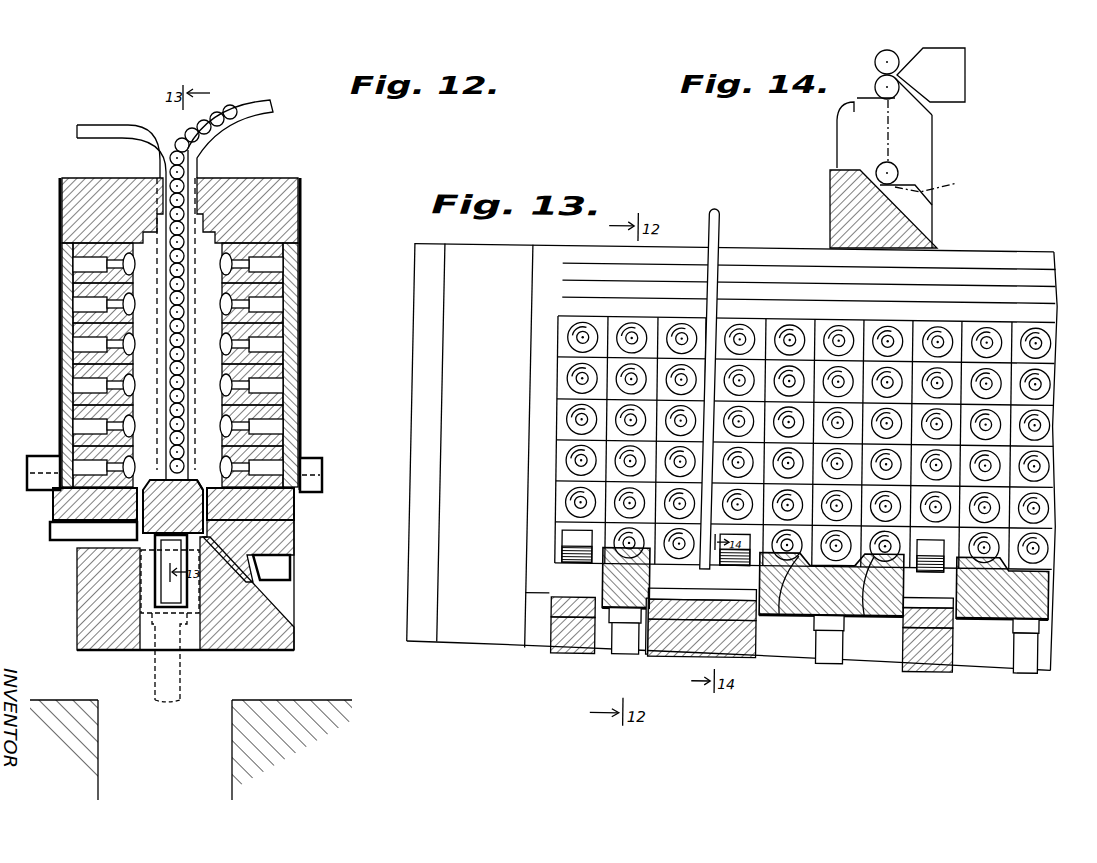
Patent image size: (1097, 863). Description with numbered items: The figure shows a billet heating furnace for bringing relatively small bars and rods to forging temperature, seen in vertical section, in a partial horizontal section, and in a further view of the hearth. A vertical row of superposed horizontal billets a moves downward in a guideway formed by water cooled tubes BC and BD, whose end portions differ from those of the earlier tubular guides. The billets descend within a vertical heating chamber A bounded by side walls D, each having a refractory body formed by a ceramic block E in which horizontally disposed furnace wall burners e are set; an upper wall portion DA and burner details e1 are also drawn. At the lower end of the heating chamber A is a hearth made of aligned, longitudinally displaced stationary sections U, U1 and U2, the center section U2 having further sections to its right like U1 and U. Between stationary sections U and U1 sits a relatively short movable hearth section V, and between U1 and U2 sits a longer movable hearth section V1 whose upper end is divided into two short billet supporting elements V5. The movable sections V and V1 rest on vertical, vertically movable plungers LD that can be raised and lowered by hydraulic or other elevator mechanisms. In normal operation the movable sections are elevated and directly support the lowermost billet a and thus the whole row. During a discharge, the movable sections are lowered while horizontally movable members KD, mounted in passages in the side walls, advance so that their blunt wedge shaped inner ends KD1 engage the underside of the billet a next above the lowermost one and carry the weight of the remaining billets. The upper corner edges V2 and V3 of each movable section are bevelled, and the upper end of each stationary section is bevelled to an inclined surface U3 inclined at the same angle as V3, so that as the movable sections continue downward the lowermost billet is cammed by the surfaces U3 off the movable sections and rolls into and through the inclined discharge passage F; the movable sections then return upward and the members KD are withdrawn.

In FIG. 12, the water cooled tube BC is at (150, 140).
In FIG. 13, the water cooled tube BC is at (720, 236).
In FIG. 12, the water cooled tube BD is at (220, 134).
In FIG. 12, the upper block DA is at (300, 199).
In FIG. 12, the side wall D is at (75, 212).
In FIG. 13, the side wall D is at (478, 632).
In FIG. 12, the heating chamber A is at (208, 258).
In FIG. 12, the ceramic block E is at (268, 334).
In FIG. 13, the ceramic block E is at (566, 343).
In FIG. 12, the furnace wall burner e is at (265, 307).
In FIG. 13, the furnace wall burner e is at (567, 458).
In FIG. 12, the cell bulb e1 is at (138, 300).
In FIG. 13, the cell bulb e1 is at (572, 412).
In FIG. 12, the billet a is at (182, 343).
In FIG. 14, the billet a is at (887, 142).
In FIG. 12, the horizontally movable member (plunger) KD is at (42, 462).
In FIG. 13, the horizontally movable member (plunger) KD is at (573, 540).
In FIG. 14, the horizontally movable member (plunger) KD is at (952, 87).
In FIG. 14, the inner end of plunger KD1 is at (861, 102).
In FIG. 12, the movable hearth section V is at (294, 508).
In FIG. 13, the movable hearth section V is at (640, 573).
In FIG. 12, the left hand upper corner edge V2 is at (156, 480).
In FIG. 14, the left hand upper corner edge V2 is at (837, 128).
In FIG. 12, the right hand upper corner edge V3 is at (195, 480).
In FIG. 14, the right hand upper corner edge V3 is at (932, 115).
In FIG. 13, the movable hearth section V1 is at (887, 578).
In FIG. 14, the movable hearth section V1 is at (915, 143).
In FIG. 13, the billet supporting element V5 is at (784, 613).
In FIG. 12, the inclined surface U3 is at (189, 556).
In FIG. 13, the inclined surface U3 is at (571, 592).
In FIG. 14, the inclined surface U3 is at (932, 208).
In FIG. 12, the stationary hearth section U1 is at (148, 560).
In FIG. 13, the stationary hearth section U1 is at (748, 652).
In FIG. 14, the stationary hearth section U1 is at (830, 181).
In FIG. 13, the stationary hearth section U is at (575, 645).
In FIG. 13, the stationary hearth section U2 is at (934, 662).
In FIG. 12, the discharge passage F is at (247, 585).
In FIG. 12, the plunger LD is at (160, 586).
In FIG. 13, the plunger LD is at (625, 643).